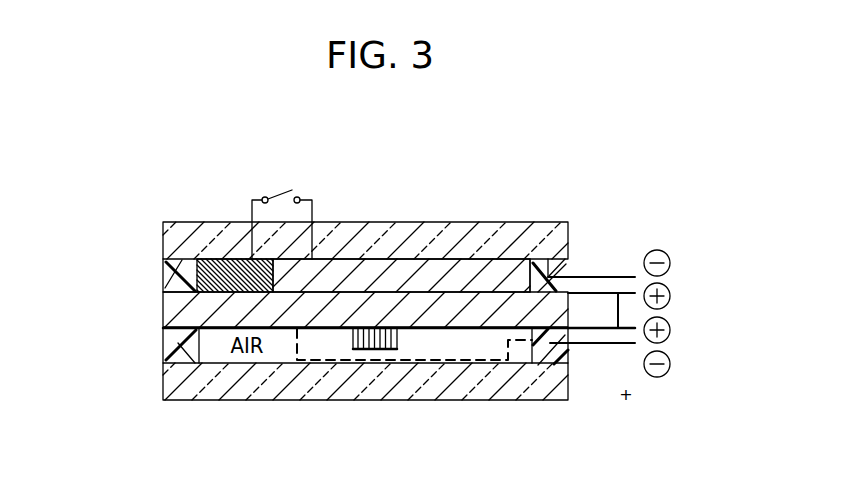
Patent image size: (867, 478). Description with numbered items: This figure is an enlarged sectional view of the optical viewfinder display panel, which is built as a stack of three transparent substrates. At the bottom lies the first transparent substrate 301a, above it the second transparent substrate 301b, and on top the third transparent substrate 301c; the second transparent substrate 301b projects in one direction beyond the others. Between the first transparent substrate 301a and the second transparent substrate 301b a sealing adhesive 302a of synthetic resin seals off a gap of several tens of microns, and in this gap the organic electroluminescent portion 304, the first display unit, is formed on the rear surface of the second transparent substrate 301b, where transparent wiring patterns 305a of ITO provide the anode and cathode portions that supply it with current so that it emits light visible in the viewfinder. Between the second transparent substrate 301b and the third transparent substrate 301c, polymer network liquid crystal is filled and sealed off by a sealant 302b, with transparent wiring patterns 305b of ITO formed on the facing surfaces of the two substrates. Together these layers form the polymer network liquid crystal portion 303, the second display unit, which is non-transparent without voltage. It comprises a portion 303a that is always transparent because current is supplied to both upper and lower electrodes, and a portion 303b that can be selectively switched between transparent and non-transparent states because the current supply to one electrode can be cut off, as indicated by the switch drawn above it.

The first transparent substrate 301a is at (277, 380).
The second transparent substrate 301b is at (517, 307).
The third transparent substrate 301c is at (432, 233).
The sealing adhesive 302a is at (180, 350).
The sealant 302b is at (185, 272).
The polymer network liquid crystal portion 303 is at (212, 157).
The always-transparent portion 303a is at (374, 263).
The switchable display portion 303b is at (215, 272).
The organic electroluminescent portion 304 is at (371, 345).
The transparent wiring patterns 305a is at (583, 345).
The transparent wiring patterns 305b is at (583, 277).